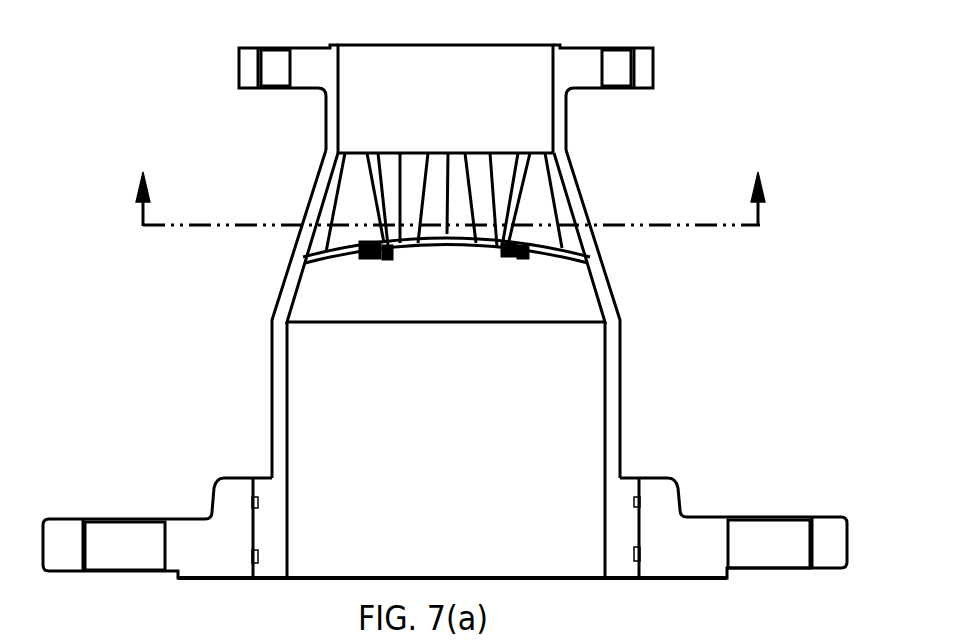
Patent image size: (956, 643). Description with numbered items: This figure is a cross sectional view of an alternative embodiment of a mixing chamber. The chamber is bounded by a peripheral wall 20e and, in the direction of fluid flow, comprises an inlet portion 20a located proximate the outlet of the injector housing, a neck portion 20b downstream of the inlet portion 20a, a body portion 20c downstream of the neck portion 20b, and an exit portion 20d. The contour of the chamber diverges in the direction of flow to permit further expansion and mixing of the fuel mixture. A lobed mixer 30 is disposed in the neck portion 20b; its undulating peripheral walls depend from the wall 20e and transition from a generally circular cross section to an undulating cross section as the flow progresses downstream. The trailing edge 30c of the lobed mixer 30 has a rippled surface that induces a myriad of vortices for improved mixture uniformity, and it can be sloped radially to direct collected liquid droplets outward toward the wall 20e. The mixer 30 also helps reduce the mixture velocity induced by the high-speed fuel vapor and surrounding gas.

The inlet portion 20a is at (482, 107).
The neck portion 20b is at (543, 290).
The body portion 20c is at (545, 458).
The exit portion 20d is at (483, 562).
The peripheral wall 20e is at (288, 440).
The lobed mixer 30 is at (372, 212).
The trailing edge 30c is at (314, 250).